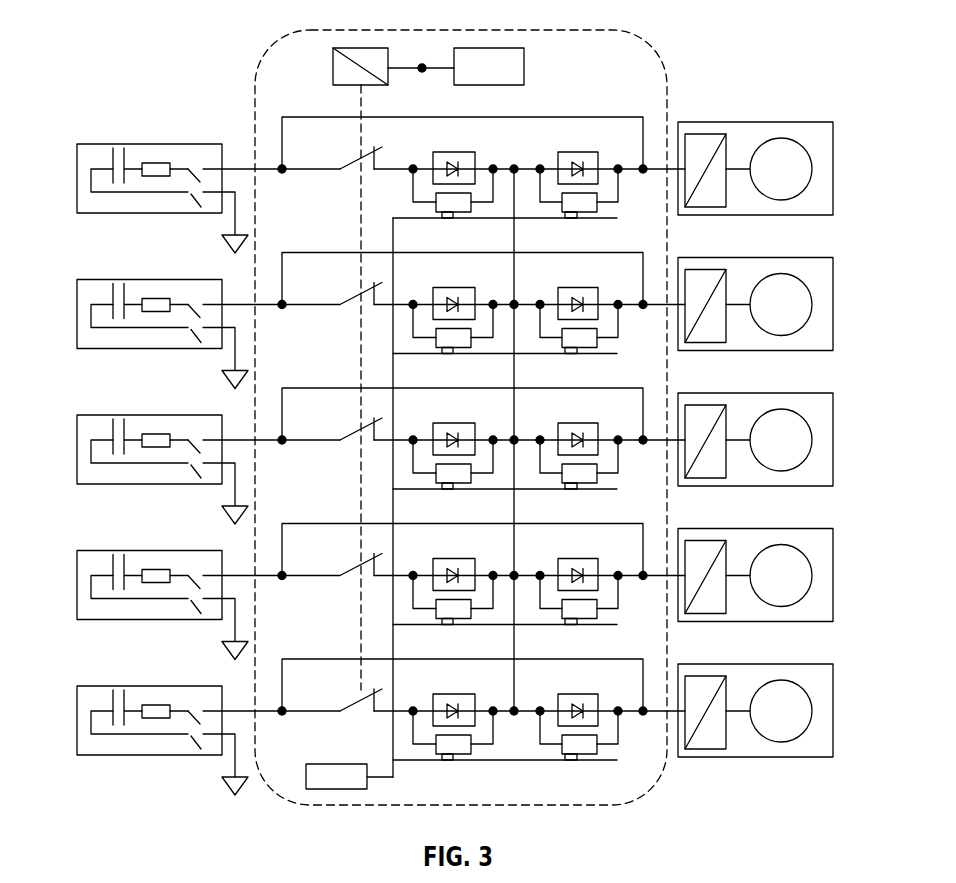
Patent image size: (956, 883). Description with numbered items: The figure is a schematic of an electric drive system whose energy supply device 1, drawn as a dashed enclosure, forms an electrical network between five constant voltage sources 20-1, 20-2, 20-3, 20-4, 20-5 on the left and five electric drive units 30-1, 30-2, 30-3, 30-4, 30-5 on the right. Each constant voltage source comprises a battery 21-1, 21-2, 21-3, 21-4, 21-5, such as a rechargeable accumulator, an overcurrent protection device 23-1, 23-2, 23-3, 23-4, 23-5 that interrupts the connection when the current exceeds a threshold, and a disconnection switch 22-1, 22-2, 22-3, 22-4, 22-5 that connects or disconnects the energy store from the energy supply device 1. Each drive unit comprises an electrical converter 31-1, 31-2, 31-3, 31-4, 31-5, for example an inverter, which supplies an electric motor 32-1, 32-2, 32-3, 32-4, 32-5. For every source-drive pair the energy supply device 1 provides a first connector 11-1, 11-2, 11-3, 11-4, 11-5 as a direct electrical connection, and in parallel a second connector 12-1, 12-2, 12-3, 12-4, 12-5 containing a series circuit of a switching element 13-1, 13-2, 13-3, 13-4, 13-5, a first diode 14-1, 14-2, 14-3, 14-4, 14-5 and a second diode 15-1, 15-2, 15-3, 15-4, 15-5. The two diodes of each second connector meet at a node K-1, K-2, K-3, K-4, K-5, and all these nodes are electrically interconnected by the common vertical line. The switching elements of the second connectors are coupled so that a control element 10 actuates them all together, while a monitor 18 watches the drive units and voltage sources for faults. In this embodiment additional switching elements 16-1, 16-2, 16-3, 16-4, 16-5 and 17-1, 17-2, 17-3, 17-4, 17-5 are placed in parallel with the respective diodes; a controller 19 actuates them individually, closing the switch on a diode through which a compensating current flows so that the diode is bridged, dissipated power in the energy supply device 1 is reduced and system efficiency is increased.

The energy supply device 1 is at (658, 60).
The control element 10 is at (333, 68).
The monitor 18 is at (524, 68).
The controller 19 is at (323, 789).
The first connector 11-1 is at (516, 167).
The second connector 12-1 is at (318, 171).
The switching element 13-1 is at (358, 155).
The first diode 14-1 is at (442, 152).
The second diode 15-1 is at (585, 152).
The switching element 16-1 is at (442, 218).
The switching element 17-1 is at (563, 218).
The node K-1 is at (514, 158).
The constant voltage source 20-1 is at (148, 177).
The battery 21-1 is at (110, 155).
The disconnection switch 22-1 is at (199, 178).
The overcurrent protection device 23-1 is at (155, 162).
The electric drive unit 30-1 is at (785, 149).
The electrical converter 31-1 is at (697, 135).
The electric motor 32-1 is at (777, 138).
The first connector 11-2 is at (516, 303).
The second connector 12-2 is at (290, 321).
The switching element 13-2 is at (337, 283).
The first diode 14-2 is at (462, 287).
The second diode 15-2 is at (596, 287).
The switching element 16-2 is at (445, 346).
The switching element 17-2 is at (571, 346).
The node K-2 is at (534, 281).
The constant voltage source 20-2 is at (148, 313).
The battery 21-2 is at (105, 278).
The disconnection switch 22-2 is at (186, 278).
The overcurrent protection device 23-2 is at (152, 275).
The electric drive unit 30-2 is at (785, 285).
The electrical converter 31-2 is at (721, 281).
The electric motor 32-2 is at (797, 277).
The first connector 11-3 is at (516, 438).
The second connector 12-3 is at (290, 456).
The switching element 13-3 is at (337, 418).
The first diode 14-3 is at (462, 422).
The second diode 15-3 is at (596, 422).
The switching element 16-3 is at (445, 481).
The switching element 17-3 is at (571, 481).
The node K-3 is at (534, 416).
The constant voltage source 20-3 is at (148, 448).
The battery 21-3 is at (105, 413).
The disconnection switch 22-3 is at (186, 413).
The overcurrent protection device 23-3 is at (152, 410).
The electric drive unit 30-3 is at (785, 420).
The electrical converter 31-3 is at (721, 416).
The electric motor 32-3 is at (797, 412).
The first connector 11-4 is at (516, 574).
The second connector 12-4 is at (290, 592).
The switching element 13-4 is at (337, 554).
The first diode 14-4 is at (462, 558).
The second diode 15-4 is at (596, 558).
The switching element 16-4 is at (445, 617).
The switching element 17-4 is at (571, 617).
The node K-4 is at (534, 552).
The constant voltage source 20-4 is at (148, 584).
The battery 21-4 is at (105, 549).
The disconnection switch 22-4 is at (186, 549).
The overcurrent protection device 23-4 is at (152, 546).
The electric drive unit 30-4 is at (785, 556).
The electrical converter 31-4 is at (721, 552).
The electric motor 32-4 is at (797, 548).
The first connector 11-5 is at (516, 709).
The second connector 12-5 is at (317, 727).
The switching element 13-5 is at (337, 689).
The first diode 14-5 is at (462, 693).
The second diode 15-5 is at (596, 693).
The switching element 16-5 is at (445, 752).
The switching element 17-5 is at (571, 752).
The node K-5 is at (534, 687).
The constant voltage source 20-5 is at (148, 719).
The battery 21-5 is at (105, 684).
The disconnection switch 22-5 is at (186, 684).
The overcurrent protection device 23-5 is at (152, 681).
The electric drive unit 30-5 is at (785, 691).
The electrical converter 31-5 is at (721, 687).
The electric motor 32-5 is at (797, 683).